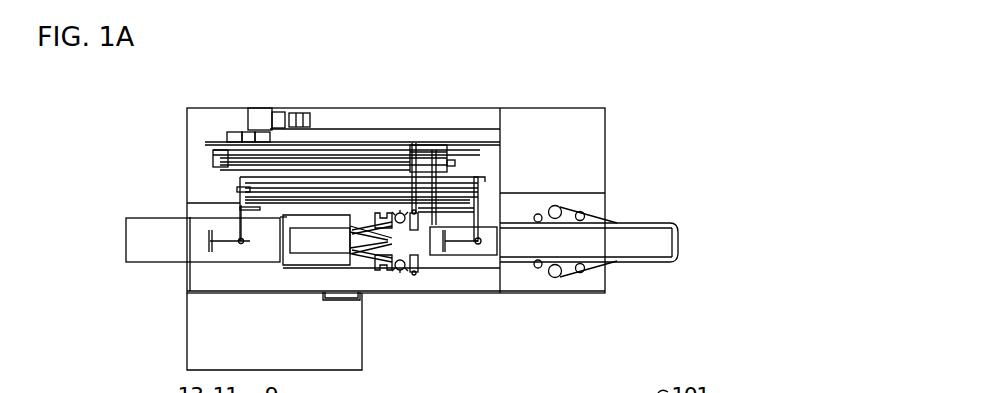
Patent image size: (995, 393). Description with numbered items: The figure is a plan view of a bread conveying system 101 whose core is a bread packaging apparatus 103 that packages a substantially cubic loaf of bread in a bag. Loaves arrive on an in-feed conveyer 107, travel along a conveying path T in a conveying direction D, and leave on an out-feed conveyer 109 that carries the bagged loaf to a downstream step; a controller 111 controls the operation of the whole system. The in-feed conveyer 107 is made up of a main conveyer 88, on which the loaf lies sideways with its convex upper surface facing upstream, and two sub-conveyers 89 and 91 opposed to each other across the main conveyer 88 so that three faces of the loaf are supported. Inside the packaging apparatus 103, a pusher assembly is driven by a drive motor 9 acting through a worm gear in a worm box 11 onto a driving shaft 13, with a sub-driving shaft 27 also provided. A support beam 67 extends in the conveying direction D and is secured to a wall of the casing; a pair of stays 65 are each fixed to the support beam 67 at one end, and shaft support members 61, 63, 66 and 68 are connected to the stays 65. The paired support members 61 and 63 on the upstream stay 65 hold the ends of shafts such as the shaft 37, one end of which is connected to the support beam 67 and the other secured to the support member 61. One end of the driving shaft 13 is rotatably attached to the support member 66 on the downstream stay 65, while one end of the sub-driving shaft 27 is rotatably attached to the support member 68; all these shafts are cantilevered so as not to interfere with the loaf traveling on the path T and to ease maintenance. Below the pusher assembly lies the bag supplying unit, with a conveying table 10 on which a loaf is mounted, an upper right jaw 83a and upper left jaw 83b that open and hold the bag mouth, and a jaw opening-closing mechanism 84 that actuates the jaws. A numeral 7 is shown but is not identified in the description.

The fixing pin 7 is at (268, 200).
The drive motor 9 is at (302, 117).
The conveying table 10 is at (420, 255).
The worm box 11 is at (265, 118).
The driving shaft 13 is at (241, 243).
The sub-driving shaft 27 is at (237, 133).
The shaft 37 is at (445, 140).
The shaft support member 61 is at (478, 248).
The shaft support member 63 is at (503, 153).
The stay 65 is at (289, 117).
The shaft support member 66 is at (270, 215).
The support beam 67 is at (460, 150).
The shaft support member 68 is at (248, 218).
The upper right jaw 83a is at (362, 228).
The upper left jaw 83b is at (352, 262).
The jaw opening-closing mechanism 84 is at (445, 252).
The main conveyer 88 is at (656, 243).
The sub-conveyer 89 is at (625, 262).
The sub-conveyer 91 is at (625, 222).
The bread conveying system 101 is at (384, 84).
The bread packaging apparatus 103 is at (350, 384).
The in-feed conveyer 107 is at (670, 195).
The out-feed conveyer 109 is at (170, 194).
The controller 111 is at (580, 143).
The conveying path T is at (316, 250).
The conveying direction D is at (700, 248).